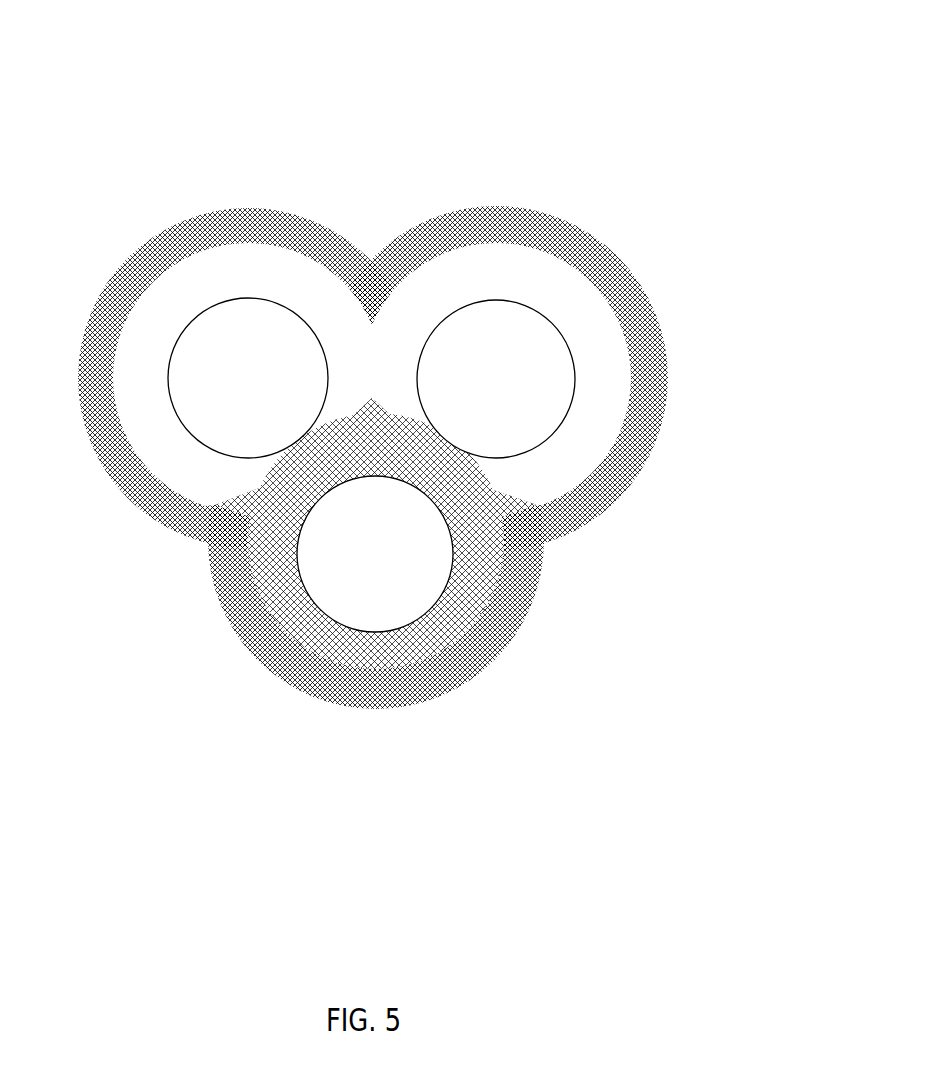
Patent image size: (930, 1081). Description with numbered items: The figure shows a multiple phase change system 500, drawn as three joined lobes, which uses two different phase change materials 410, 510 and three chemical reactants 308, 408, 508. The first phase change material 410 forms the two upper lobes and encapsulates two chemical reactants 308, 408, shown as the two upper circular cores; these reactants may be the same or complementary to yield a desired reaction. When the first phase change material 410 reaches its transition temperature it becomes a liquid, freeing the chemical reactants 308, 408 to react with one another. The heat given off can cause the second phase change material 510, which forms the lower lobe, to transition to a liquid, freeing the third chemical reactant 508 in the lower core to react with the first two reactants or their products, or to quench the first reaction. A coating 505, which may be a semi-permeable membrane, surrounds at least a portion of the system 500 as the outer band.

The multiple phase change system 500 is at (392, 358).
The coating 505 is at (277, 230).
The chemical reactant 308 is at (226, 347).
The phase change material 410 is at (482, 273).
The chemical reactant 408 is at (512, 400).
The chemical reactant 508 is at (330, 573).
The phase change material 510 is at (482, 547).